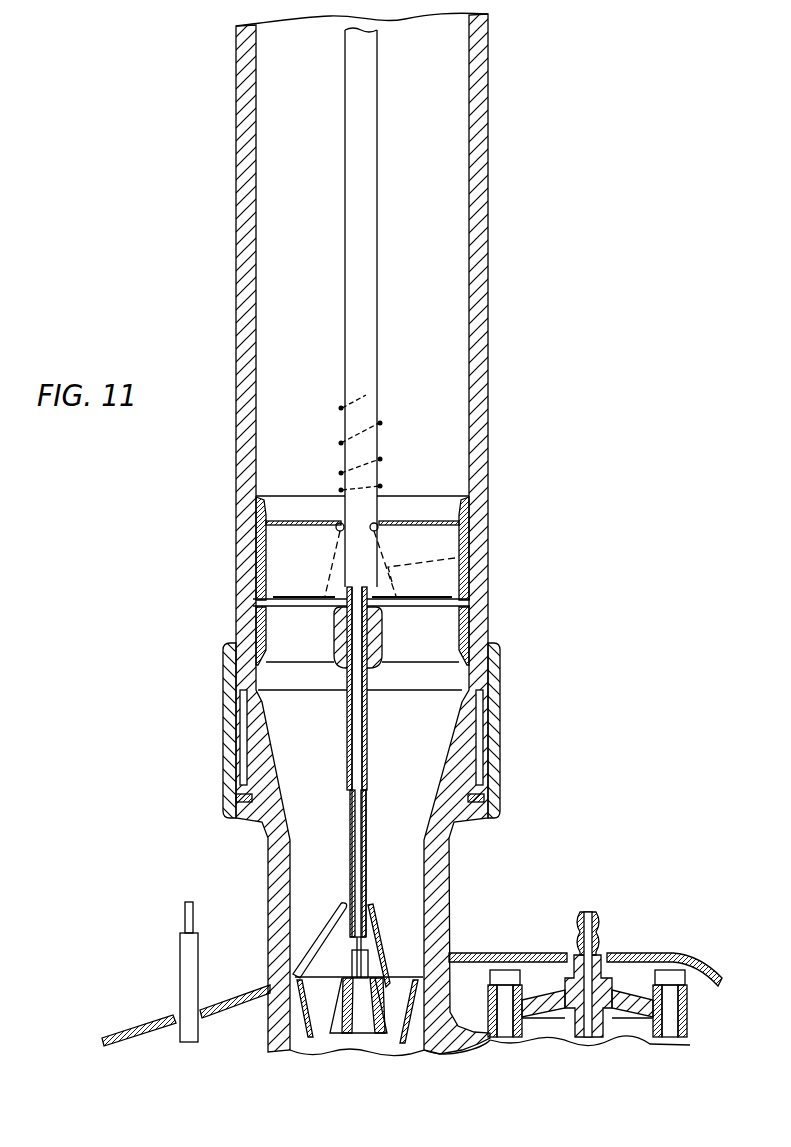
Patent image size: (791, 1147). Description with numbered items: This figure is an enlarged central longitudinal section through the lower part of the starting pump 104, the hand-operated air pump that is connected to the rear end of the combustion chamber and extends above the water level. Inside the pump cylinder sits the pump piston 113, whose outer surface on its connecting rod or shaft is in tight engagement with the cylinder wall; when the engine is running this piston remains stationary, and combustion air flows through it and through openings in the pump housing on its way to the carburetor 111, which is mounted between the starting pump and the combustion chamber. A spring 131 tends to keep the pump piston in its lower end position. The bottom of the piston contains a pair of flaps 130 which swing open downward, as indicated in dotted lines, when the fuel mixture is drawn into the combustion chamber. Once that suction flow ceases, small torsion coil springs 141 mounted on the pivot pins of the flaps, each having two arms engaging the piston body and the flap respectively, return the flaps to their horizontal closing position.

The starting pump 104 is at (405, 782).
The carburetor 111 is at (323, 998).
The pump piston 113 is at (462, 503).
The flaps 130 is at (414, 525).
The spring 131 is at (346, 407).
The torsion coil springs 141 is at (337, 530).